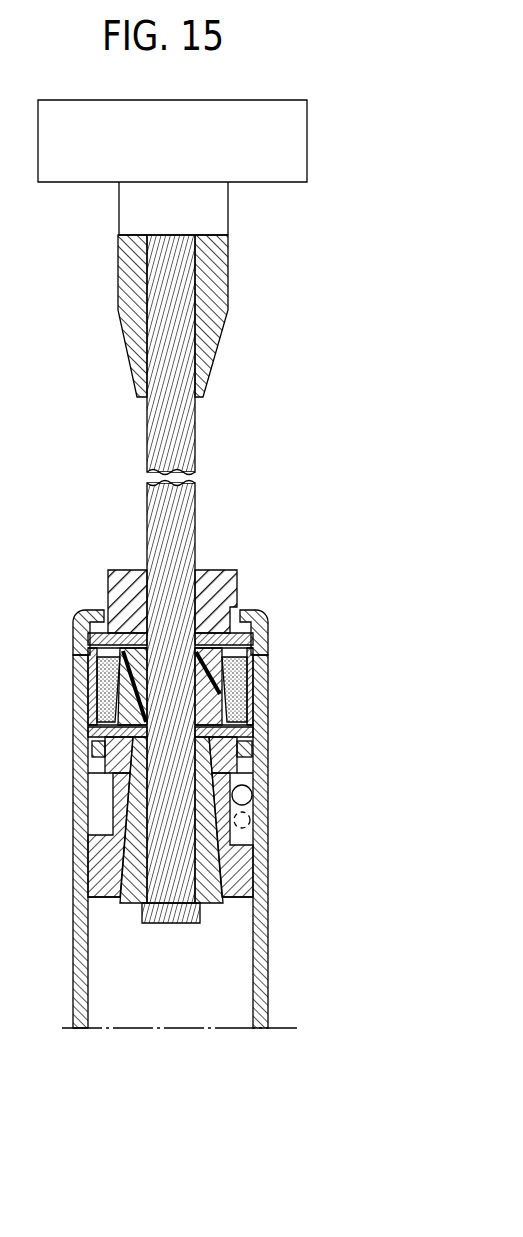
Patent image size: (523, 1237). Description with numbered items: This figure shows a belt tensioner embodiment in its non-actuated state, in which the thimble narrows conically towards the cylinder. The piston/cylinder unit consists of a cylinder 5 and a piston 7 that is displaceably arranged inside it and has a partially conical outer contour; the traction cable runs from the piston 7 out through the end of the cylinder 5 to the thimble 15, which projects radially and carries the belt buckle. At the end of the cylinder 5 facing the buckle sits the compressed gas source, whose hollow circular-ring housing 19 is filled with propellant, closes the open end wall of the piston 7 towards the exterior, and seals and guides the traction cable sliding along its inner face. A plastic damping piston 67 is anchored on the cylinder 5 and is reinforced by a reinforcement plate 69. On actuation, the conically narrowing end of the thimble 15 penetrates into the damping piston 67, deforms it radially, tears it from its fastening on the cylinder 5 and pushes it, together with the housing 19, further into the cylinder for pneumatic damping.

The cylinder 5 is at (260, 946).
The piston 7 is at (100, 838).
The thimble 15 is at (213, 284).
The housing 19 is at (88, 694).
The damping piston 67 is at (230, 585).
The reinforcement plate 69 is at (262, 646).